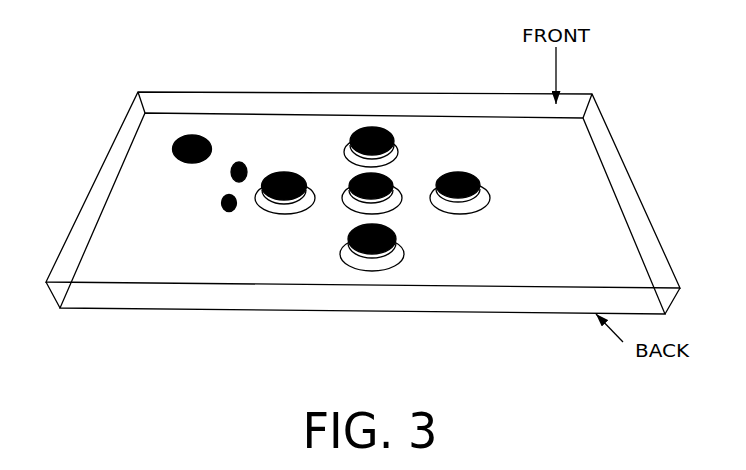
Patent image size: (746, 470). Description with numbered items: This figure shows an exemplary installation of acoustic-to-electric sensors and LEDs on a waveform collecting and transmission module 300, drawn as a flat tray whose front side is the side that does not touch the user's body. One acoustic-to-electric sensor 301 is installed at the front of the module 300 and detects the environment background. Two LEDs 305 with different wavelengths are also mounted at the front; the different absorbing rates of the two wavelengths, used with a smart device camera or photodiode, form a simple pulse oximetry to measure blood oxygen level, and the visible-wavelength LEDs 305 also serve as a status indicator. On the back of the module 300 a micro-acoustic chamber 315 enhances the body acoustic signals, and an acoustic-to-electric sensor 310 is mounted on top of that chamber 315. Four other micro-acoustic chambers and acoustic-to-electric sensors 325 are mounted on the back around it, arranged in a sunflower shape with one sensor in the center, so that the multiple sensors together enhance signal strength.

The waveform collecting and transmission module 300 is at (90, 73).
The acoustic-to-electric sensor 301 is at (190, 146).
The LEDs 305 is at (237, 202).
The acoustic-to-electric sensor 310 is at (286, 185).
The micro-acoustic chamber 315 is at (313, 186).
The micro-acoustic chambers and acoustic-to-electric sensors 325 is at (400, 244).